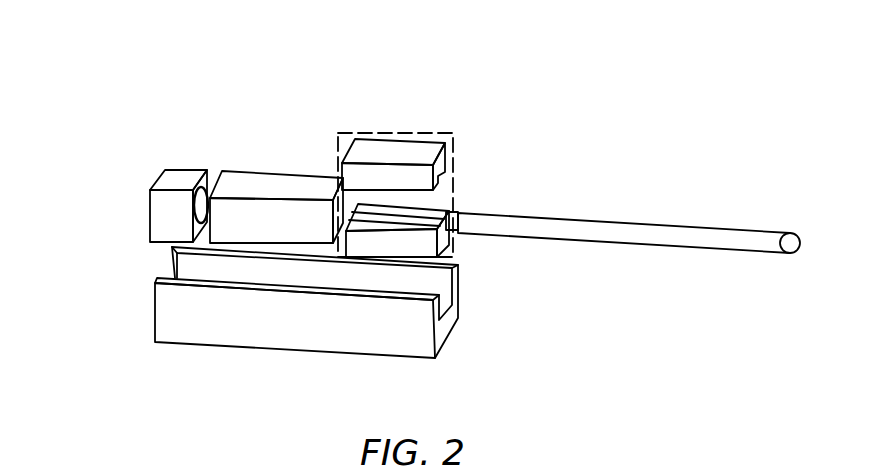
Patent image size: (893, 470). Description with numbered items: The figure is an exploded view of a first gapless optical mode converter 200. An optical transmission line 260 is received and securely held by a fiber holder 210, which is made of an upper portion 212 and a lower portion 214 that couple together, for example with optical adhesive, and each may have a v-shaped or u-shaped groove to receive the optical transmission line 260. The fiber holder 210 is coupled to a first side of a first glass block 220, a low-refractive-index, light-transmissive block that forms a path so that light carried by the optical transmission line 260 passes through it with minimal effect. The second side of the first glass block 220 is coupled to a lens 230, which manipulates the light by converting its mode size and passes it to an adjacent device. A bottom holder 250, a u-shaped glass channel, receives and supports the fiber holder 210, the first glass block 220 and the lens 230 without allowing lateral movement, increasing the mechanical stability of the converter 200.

The first gapless optical mode converter 200 is at (84, 60).
The fiber holder 210 is at (373, 132).
The upper portion 212 is at (448, 150).
The lower portion 214 is at (458, 213).
The first glass block 220 is at (232, 169).
The lens 230 is at (170, 167).
The bottom holder 250 is at (457, 323).
The optical transmission line 260 is at (525, 215).